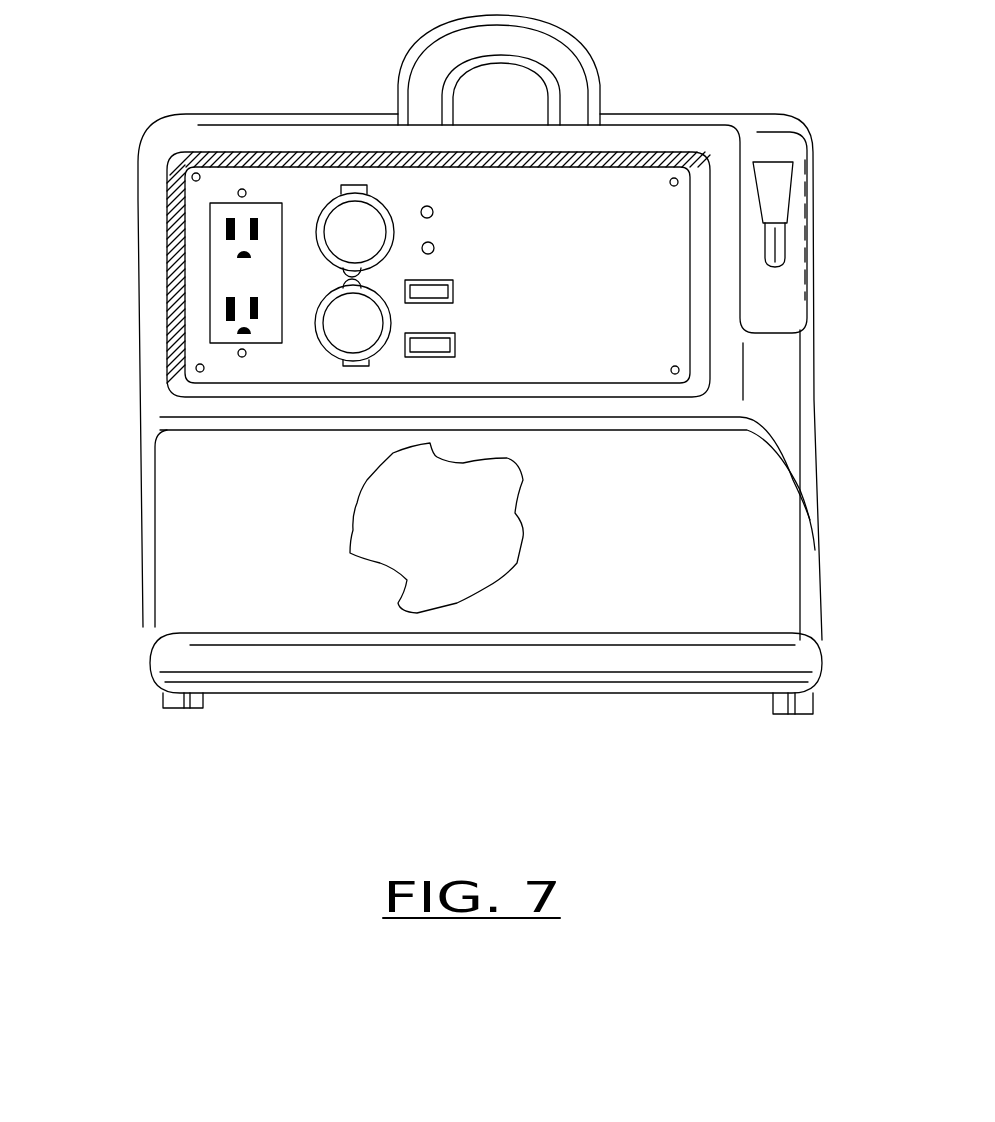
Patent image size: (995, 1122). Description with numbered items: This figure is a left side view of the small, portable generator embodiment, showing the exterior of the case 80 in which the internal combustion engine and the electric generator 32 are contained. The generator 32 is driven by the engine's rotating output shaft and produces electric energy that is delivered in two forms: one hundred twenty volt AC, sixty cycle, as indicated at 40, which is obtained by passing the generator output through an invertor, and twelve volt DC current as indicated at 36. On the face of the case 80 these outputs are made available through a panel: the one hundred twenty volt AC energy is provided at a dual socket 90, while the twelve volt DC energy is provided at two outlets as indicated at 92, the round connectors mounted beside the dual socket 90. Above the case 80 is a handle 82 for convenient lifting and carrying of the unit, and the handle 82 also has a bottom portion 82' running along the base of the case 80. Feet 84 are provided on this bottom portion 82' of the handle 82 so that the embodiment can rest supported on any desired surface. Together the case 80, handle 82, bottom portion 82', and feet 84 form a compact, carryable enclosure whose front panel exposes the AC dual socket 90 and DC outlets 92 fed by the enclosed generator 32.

The electric generator 32 is at (436, 528).
The 12 volt DC current 36 is at (312, 283).
The 120 volts AC output 40 is at (210, 230).
The case 80 is at (135, 528).
The handle 82 is at (541, 65).
The bottom portion of handle 82' is at (486, 690).
The feet 84 is at (153, 712).
The dual socket 90 is at (195, 303).
The 12 volt DC outlets 92 is at (365, 310).